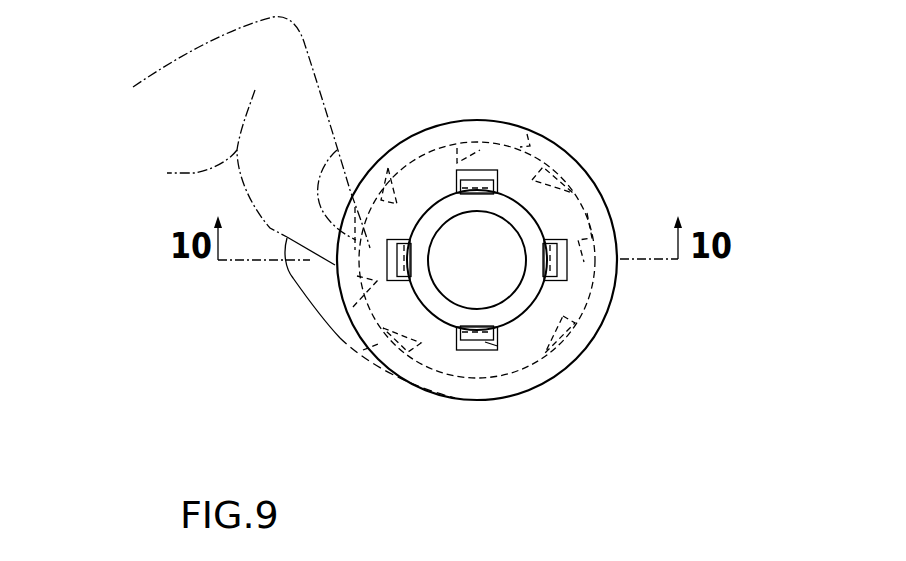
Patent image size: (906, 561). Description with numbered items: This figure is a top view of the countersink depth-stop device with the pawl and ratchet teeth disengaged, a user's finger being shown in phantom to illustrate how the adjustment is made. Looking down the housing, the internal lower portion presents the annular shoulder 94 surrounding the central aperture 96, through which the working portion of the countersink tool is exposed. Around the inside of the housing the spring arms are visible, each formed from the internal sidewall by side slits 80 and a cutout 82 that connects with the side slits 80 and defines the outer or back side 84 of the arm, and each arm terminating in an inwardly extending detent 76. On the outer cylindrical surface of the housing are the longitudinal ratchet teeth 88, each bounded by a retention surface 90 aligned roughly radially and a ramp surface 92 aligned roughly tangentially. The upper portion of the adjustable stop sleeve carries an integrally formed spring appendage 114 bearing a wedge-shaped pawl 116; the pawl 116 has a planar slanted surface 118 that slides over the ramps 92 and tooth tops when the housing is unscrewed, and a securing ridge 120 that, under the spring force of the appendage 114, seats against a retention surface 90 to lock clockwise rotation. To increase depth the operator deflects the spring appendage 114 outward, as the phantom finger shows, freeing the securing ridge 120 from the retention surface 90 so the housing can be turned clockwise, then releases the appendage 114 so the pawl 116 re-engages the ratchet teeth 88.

The detent 76 is at (482, 183).
The side slit 80 is at (457, 350).
The cutout 82 is at (473, 343).
The outer or back side 84 is at (485, 342).
The ratchet teeth 88 is at (590, 212).
The retention surface 90 is at (395, 190).
The ramp surface 92 is at (475, 157).
The annular shoulder 94 is at (527, 225).
The central aperture 96 is at (517, 293).
The spring appendage 114 is at (363, 350).
The pawl 116 is at (305, 272).
The planar slanted surface 118 is at (330, 268).
The securing ridge 120 is at (322, 278).